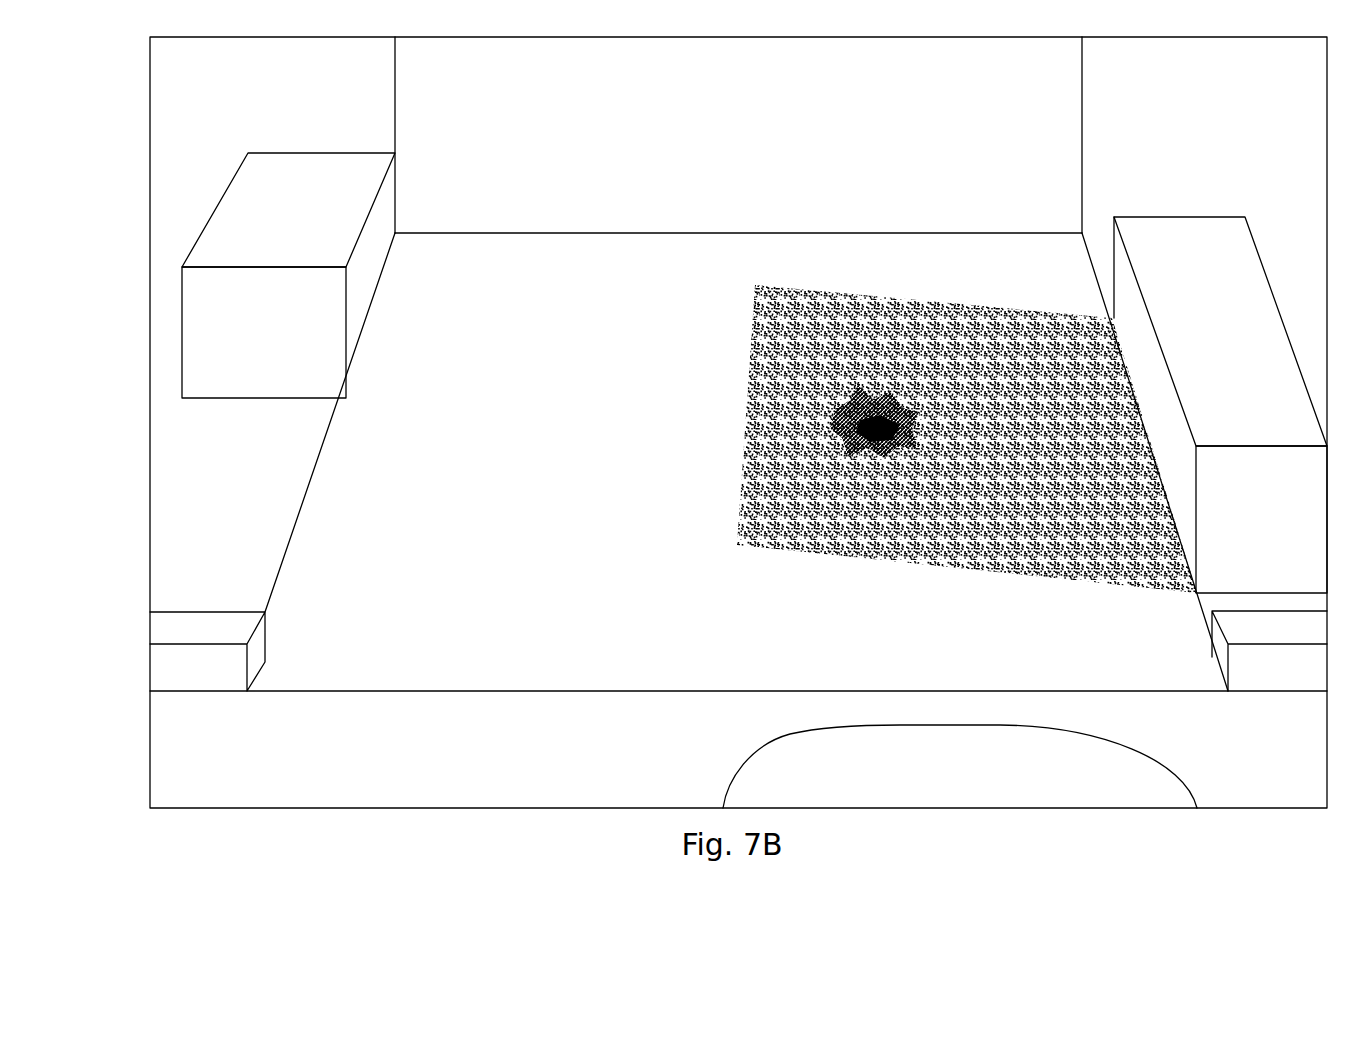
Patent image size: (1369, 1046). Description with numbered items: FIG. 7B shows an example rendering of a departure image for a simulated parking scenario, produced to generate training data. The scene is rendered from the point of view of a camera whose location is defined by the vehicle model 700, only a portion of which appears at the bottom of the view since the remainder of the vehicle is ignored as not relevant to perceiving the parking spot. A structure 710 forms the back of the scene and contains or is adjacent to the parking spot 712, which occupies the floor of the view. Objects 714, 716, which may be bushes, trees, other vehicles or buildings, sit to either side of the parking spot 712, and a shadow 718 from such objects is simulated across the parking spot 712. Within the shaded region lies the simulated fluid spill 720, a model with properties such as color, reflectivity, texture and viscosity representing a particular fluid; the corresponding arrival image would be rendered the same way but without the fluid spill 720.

The vehicle model 700 is at (917, 782).
The structure 710 is at (917, 135).
The parking spot 712 is at (669, 585).
The object 714 is at (1225, 398).
The object 716 is at (230, 340).
The shadow 718 is at (857, 515).
The simulated fluid spill 720 is at (838, 433).